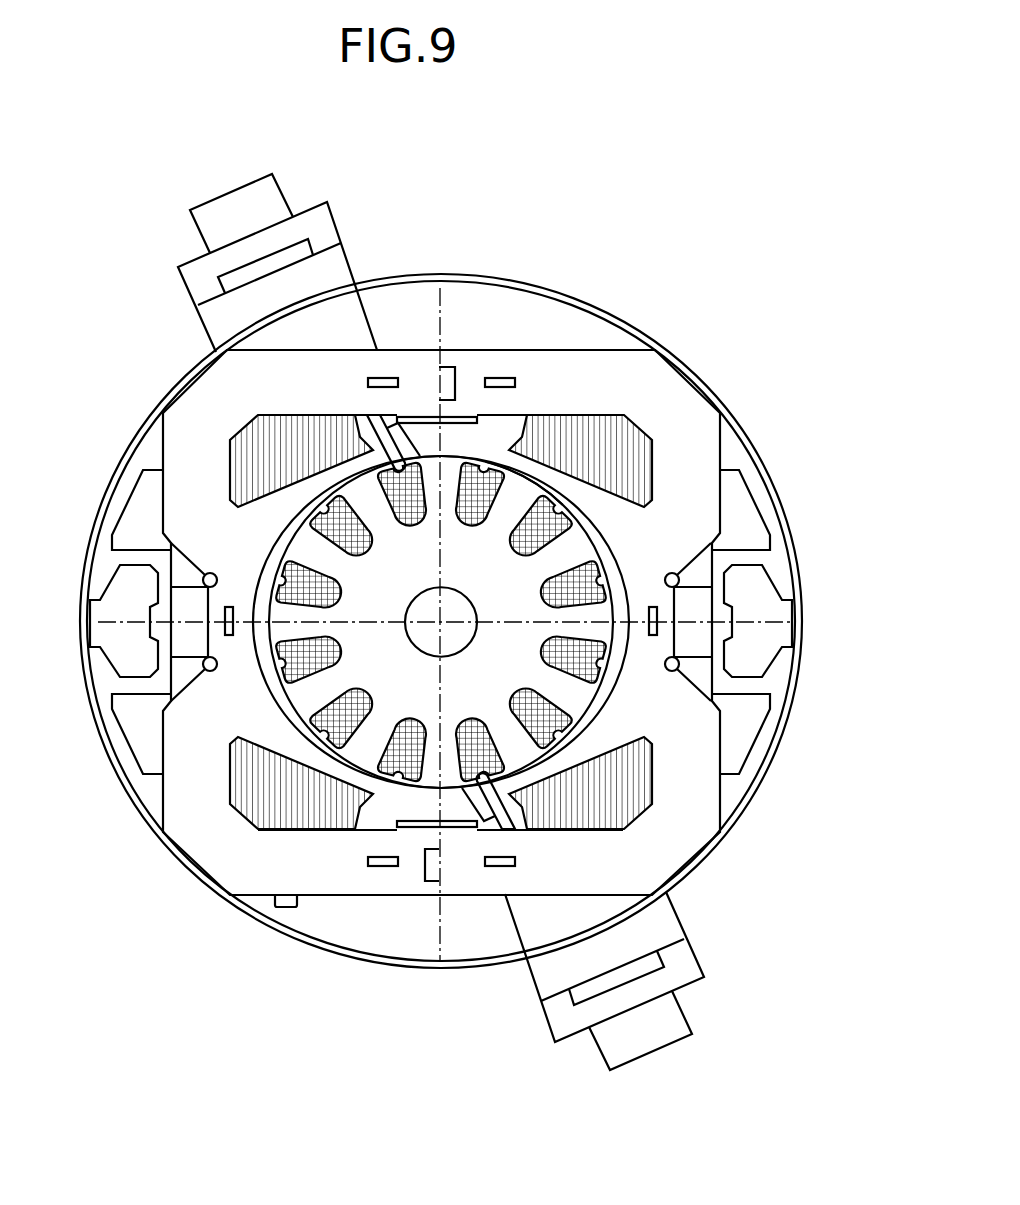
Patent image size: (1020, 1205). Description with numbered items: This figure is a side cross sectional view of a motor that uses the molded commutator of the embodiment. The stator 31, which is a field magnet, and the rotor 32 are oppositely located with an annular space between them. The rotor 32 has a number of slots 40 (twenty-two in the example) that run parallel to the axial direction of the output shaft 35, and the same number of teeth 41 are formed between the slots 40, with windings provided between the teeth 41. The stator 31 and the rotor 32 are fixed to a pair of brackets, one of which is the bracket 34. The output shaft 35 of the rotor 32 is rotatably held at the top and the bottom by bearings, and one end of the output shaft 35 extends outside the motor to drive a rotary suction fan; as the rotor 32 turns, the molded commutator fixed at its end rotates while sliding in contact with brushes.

The stator 31 is at (577, 375).
The rotor 32 is at (362, 587).
The bracket 34 is at (750, 437).
The output shaft 35 is at (327, 510).
The slots 40 is at (553, 540).
The teeth 41 is at (507, 505).